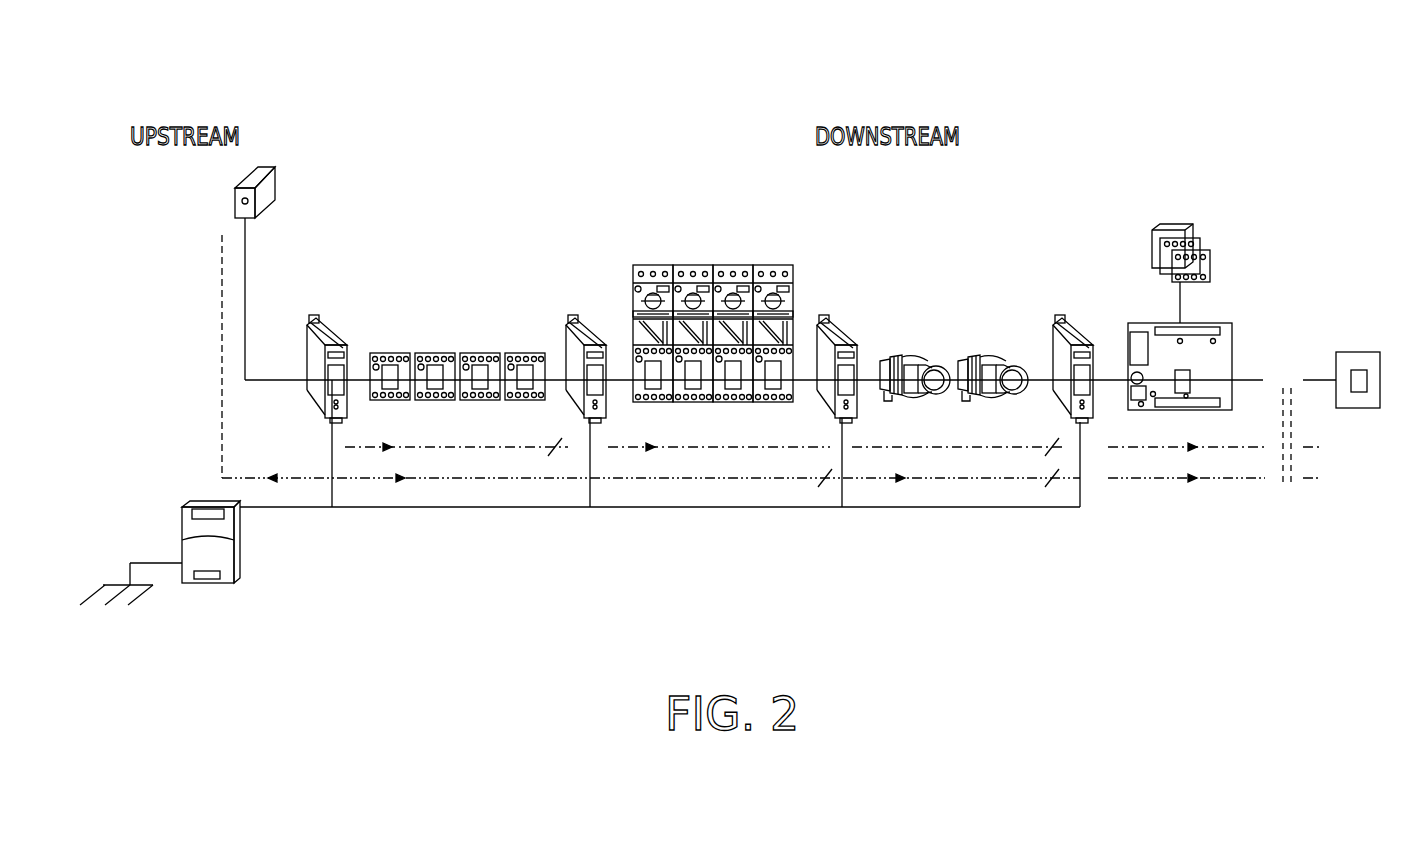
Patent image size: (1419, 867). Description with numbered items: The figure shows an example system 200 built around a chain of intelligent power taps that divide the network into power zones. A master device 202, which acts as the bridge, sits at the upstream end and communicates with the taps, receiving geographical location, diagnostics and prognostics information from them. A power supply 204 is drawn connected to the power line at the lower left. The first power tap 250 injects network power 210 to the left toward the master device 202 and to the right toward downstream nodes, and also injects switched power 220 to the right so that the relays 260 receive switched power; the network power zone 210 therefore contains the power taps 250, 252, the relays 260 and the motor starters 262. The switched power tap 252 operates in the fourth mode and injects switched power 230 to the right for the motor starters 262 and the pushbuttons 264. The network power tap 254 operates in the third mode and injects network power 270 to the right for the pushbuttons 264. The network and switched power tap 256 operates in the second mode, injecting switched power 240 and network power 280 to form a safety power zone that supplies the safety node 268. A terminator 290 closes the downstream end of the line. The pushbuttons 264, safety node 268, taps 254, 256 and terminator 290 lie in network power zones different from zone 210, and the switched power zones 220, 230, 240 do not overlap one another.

The system 200 is at (356, 55).
The master device 202 is at (233, 200).
The power supply 204 is at (205, 585).
The network power zone 210 is at (312, 485).
The switched power zone 220 is at (450, 440).
The switched power zone 230 is at (762, 445).
The switched power zone 240 is at (1166, 445).
The first power tap 250 is at (335, 332).
The switched power tap 252 is at (595, 332).
The network power tap 254 is at (846, 332).
The network and switched power tap 256 is at (1082, 332).
The relays 260 is at (528, 353).
The motor starters 262 is at (696, 265).
The pushbuttons 264 is at (970, 356).
The safety node 268 is at (1172, 225).
The network power 270 is at (962, 488).
The network power 280 is at (1150, 486).
The terminator 290 is at (1358, 352).